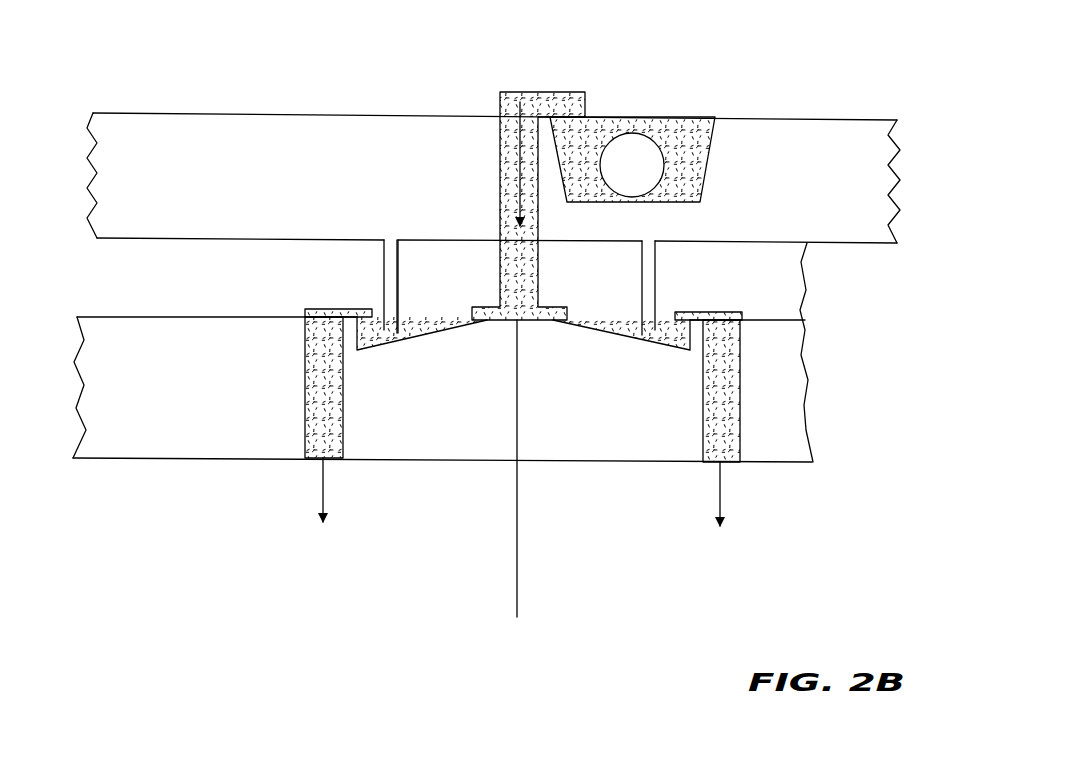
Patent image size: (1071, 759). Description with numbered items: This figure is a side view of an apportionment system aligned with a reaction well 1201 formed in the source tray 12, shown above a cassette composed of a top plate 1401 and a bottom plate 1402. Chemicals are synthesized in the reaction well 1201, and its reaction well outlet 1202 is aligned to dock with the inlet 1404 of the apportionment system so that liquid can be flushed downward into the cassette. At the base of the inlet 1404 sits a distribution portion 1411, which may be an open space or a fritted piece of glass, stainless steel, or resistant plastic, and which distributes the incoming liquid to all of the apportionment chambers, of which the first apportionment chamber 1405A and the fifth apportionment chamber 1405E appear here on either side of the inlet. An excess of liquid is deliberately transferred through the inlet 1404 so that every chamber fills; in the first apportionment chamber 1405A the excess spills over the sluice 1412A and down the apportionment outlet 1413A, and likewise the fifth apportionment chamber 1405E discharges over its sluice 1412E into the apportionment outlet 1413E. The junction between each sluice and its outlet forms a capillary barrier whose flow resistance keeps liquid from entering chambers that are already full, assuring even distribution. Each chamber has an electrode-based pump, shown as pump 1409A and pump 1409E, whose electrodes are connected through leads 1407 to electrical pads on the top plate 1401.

The source tray 12 is at (862, 122).
The reaction well 1201 is at (712, 148).
The reaction well outlet 1202 is at (500, 168).
The top plate 1401 is at (800, 302).
The bottom plate 1402 is at (808, 385).
The inlet 1404 is at (533, 276).
The first apportionment chamber 1405A is at (592, 330).
The fifth apportionment chamber 1405E is at (370, 355).
The lead 1407 is at (657, 275).
The electrode-based pump 1409A is at (645, 337).
The electrode-based pump 1409E is at (390, 333).
The distribution portion 1411 is at (483, 302).
The sluice 1412A is at (720, 312).
The sluice 1412E is at (325, 308).
The apportionment outlet 1413A is at (737, 433).
The apportionment outlet 1413E is at (343, 427).